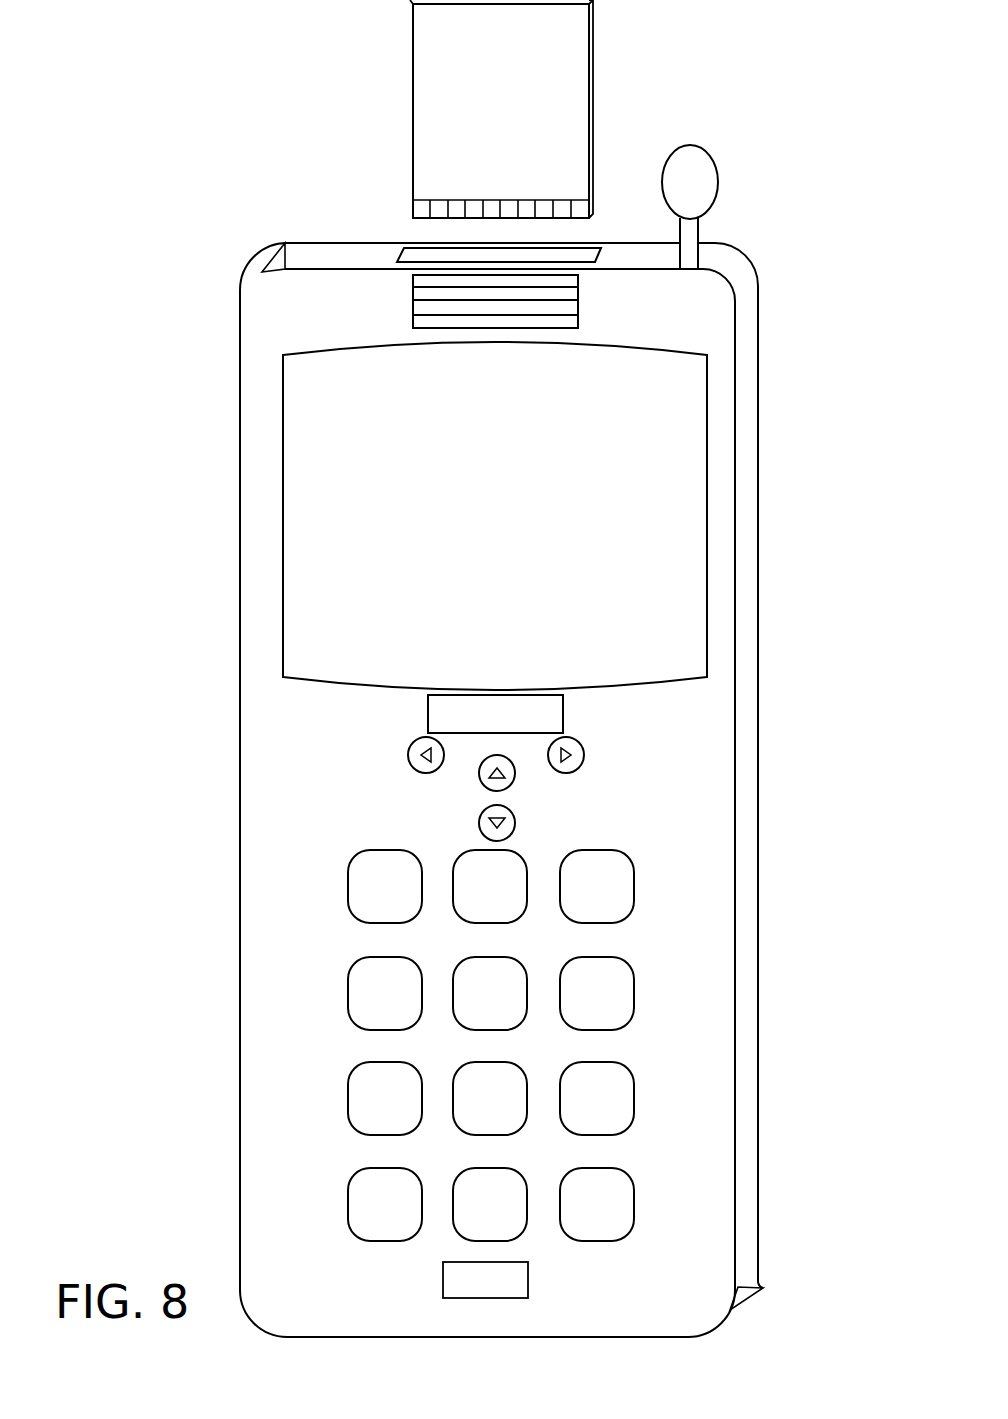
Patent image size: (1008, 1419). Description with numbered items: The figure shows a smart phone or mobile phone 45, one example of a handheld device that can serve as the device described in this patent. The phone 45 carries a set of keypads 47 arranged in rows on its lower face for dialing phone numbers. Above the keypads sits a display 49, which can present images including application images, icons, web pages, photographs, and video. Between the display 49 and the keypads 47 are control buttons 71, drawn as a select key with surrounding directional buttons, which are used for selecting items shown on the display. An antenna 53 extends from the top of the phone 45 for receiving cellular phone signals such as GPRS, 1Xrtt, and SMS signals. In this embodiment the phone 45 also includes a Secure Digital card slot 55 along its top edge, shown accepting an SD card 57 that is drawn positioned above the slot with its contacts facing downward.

The smart phone or mobile phone 45 is at (240, 308).
The set of keypads 47 is at (652, 895).
The display 49 is at (707, 513).
The antenna 53 is at (720, 189).
The Secure Digital (SD) card slot 55 is at (440, 258).
The SD card 57 is at (600, 67).
The control buttons 71 is at (445, 781).